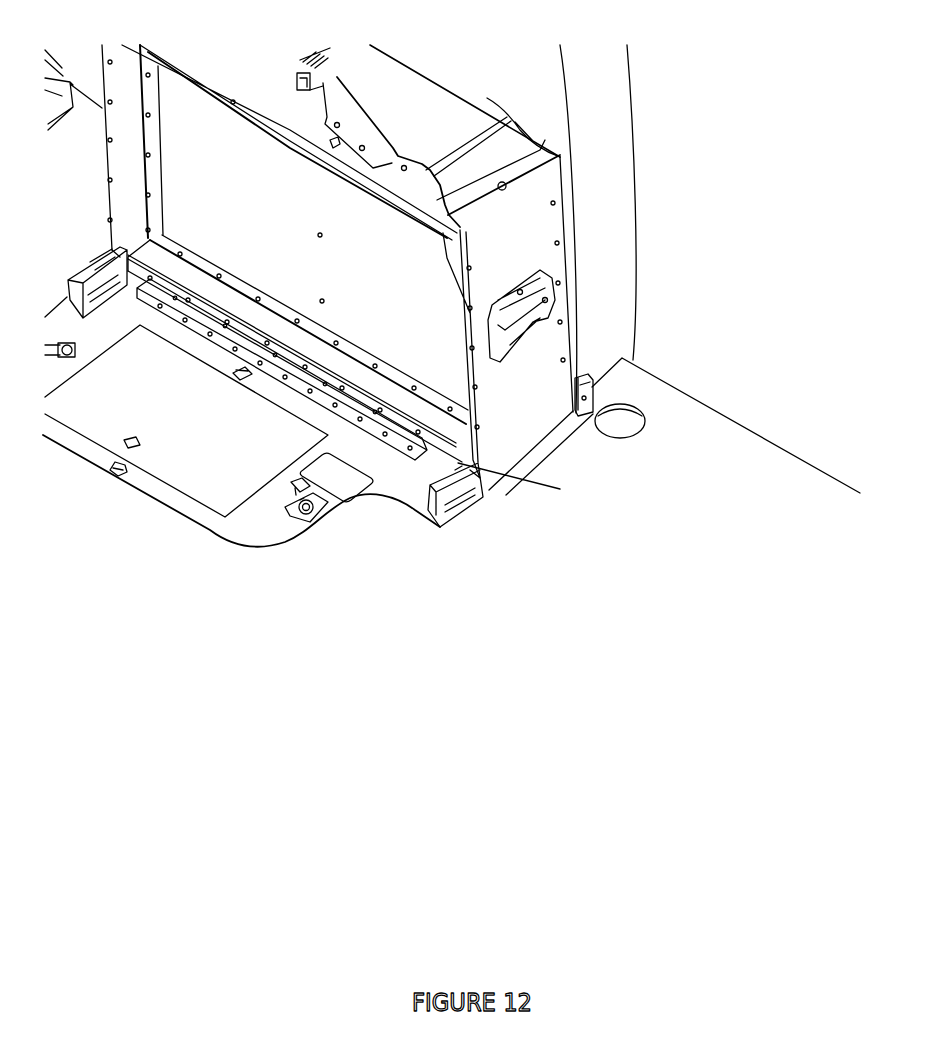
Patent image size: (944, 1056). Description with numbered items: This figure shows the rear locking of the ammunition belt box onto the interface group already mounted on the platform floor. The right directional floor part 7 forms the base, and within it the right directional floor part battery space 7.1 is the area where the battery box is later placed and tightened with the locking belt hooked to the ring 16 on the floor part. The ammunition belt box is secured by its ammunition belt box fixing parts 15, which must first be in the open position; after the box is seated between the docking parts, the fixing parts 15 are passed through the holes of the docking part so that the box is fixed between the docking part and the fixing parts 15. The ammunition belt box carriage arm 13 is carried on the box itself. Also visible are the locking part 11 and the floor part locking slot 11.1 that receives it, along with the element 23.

The right directional floor part 7 is at (241, 525).
The right directional floor part battery space 7.1 is at (208, 496).
The locking part 11 is at (313, 508).
The floor part locking slot 11.1 is at (308, 520).
The ammunition belt box carriage arm 13 is at (536, 340).
The ammunition belt box fixing parts 15 is at (463, 462).
The ring 16 is at (115, 480).
The support frame 23 is at (440, 455).